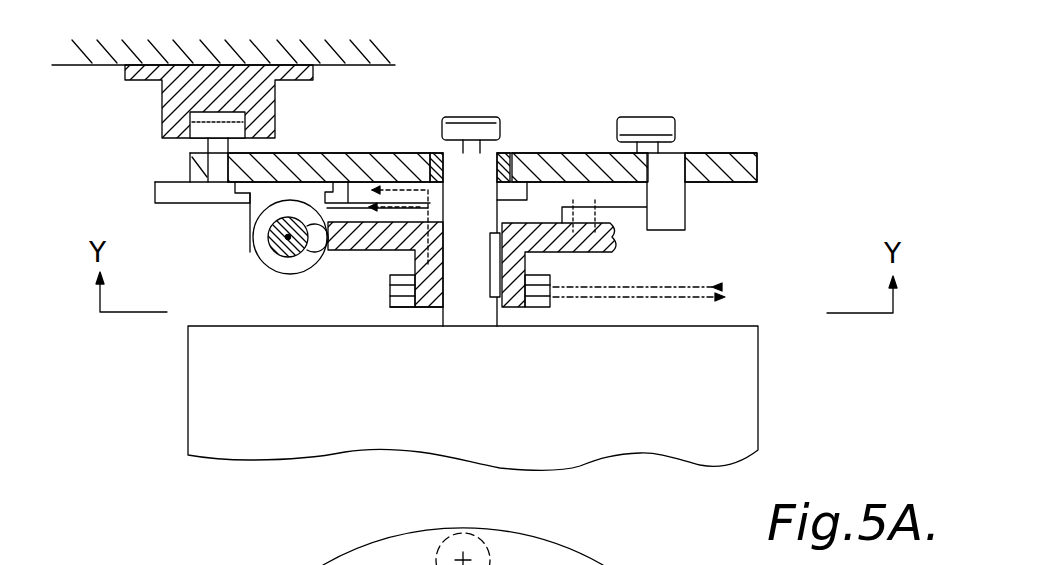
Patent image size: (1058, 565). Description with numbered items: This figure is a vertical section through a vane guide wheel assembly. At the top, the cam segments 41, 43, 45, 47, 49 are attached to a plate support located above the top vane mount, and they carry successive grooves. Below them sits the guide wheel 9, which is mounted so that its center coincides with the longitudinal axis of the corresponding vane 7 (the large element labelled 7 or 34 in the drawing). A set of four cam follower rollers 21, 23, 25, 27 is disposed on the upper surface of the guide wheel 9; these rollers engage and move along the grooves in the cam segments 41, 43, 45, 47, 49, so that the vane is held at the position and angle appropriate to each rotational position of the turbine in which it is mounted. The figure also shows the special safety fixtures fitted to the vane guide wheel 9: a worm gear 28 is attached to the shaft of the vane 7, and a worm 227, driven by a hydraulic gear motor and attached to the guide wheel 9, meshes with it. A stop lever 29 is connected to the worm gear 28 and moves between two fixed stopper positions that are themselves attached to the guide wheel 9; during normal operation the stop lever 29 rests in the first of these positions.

The cam segment 41 is at (164, 123).
The cam segment 43 is at (164, 123).
The cam segment 45 is at (164, 123).
The cam segment 47 is at (164, 123).
The cam segment 49 is at (182, 102).
The guide wheel 9 is at (715, 163).
The cam follower roller 21 is at (645, 81).
The cam follower roller 23 is at (645, 81).
The cam follower roller 25 is at (645, 81).
The cam follower roller 27 is at (647, 130).
The worm gear 28 is at (547, 232).
The stop lever 29 is at (627, 213).
The worm 227 is at (288, 237).
The vane 7 is at (548, 398).
The turntable 34 is at (718, 427).